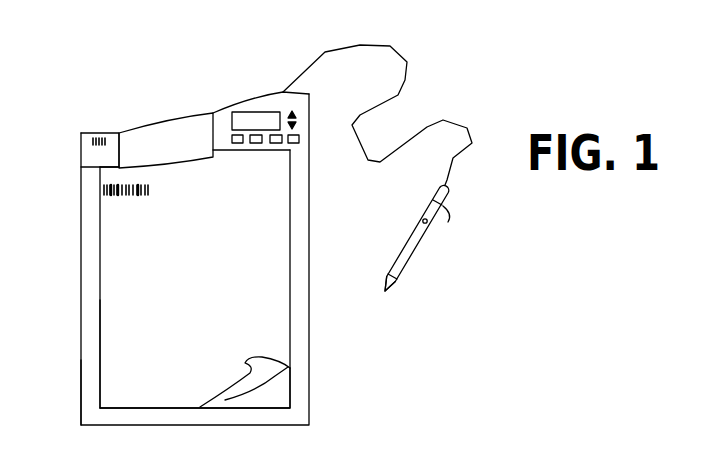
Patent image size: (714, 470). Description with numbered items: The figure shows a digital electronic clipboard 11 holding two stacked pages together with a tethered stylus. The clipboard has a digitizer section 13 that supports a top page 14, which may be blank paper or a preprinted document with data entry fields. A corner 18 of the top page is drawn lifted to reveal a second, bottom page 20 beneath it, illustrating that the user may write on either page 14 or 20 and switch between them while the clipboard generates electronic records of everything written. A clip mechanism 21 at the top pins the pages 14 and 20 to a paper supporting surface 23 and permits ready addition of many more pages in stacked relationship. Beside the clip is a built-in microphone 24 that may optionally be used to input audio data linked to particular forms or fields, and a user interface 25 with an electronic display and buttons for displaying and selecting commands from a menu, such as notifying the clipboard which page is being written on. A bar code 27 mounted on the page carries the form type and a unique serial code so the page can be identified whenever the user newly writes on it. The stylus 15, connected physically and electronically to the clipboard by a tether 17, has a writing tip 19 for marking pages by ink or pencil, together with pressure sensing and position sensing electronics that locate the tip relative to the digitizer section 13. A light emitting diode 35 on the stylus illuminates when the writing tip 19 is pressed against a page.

The digital electronic clipboard 11 is at (228, 225).
The digitizer section 13 is at (310, 298).
The top page 14 is at (268, 336).
The stylus 15 is at (442, 245).
The tether 17 is at (428, 125).
The corner 18 is at (245, 363).
The writing tip 19 is at (395, 283).
The bottom page 20 is at (275, 395).
The clip mechanism 21 is at (163, 157).
The paper supporting surface 23 is at (88, 388).
The built-in microphone 24 is at (92, 138).
The user interface 25 is at (257, 102).
The bar code 27 is at (145, 183).
The light emitting diode 35 is at (428, 224).